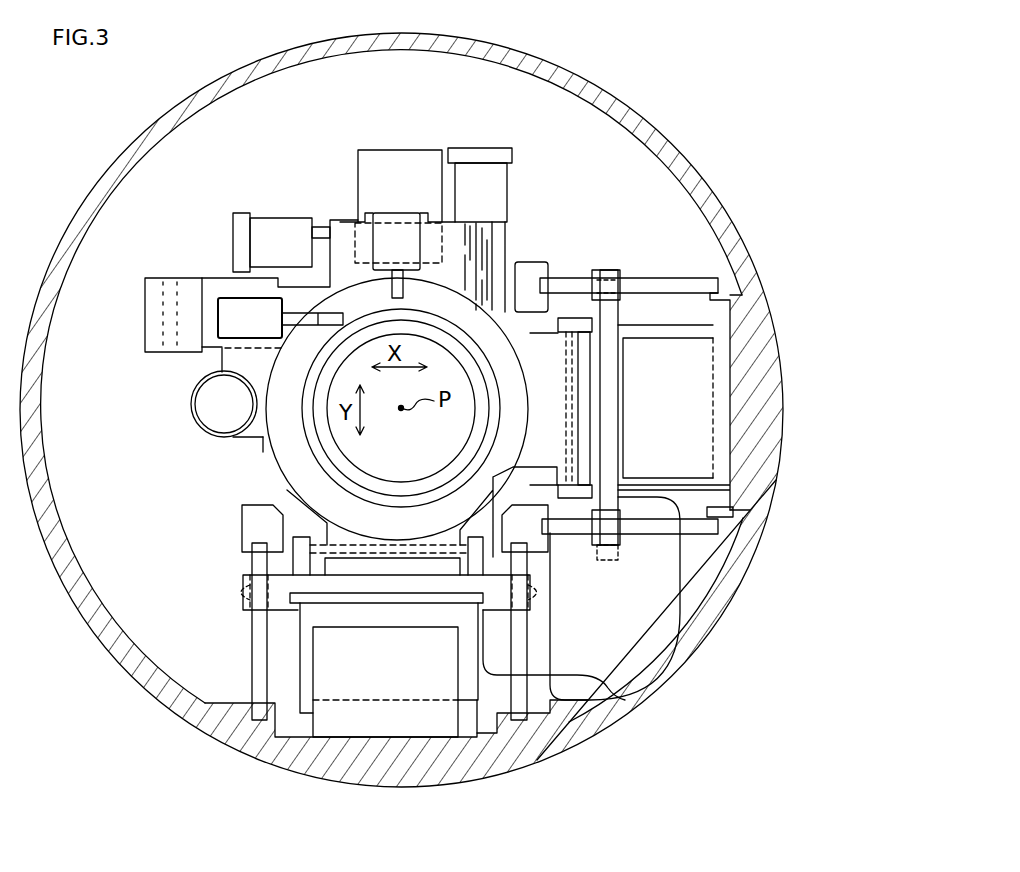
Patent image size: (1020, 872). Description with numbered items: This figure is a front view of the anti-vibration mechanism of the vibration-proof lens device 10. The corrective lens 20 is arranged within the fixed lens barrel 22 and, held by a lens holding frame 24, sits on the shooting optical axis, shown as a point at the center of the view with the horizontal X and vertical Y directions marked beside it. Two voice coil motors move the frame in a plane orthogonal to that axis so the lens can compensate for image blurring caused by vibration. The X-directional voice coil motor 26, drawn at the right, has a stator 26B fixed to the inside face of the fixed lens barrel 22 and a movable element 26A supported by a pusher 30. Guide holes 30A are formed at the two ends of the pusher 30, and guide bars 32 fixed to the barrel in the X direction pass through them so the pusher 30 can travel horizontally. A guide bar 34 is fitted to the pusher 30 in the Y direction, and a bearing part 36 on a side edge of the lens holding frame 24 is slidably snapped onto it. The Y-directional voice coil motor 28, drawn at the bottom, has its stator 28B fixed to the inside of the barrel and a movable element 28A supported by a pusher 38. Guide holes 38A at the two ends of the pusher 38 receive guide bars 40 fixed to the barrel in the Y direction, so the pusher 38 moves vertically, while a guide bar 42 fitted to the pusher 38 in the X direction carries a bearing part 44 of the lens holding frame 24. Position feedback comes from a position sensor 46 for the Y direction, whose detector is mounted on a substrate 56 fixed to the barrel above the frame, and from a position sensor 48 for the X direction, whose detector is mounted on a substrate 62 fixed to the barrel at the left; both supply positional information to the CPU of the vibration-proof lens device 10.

The vibration-proof lens device 10 is at (668, 88).
The fixed lens barrel 22 is at (690, 158).
The corrective lens 20 is at (360, 460).
The lens holding frame 24 is at (262, 455).
The X-directional voice coil motor 26 is at (722, 330).
The movable element 26A is at (737, 510).
The stator 26B is at (727, 443).
The Y-directional voice coil motor 28 is at (311, 715).
The movable element 28A is at (470, 698).
The stator 28B is at (383, 722).
The pusher 30 is at (596, 268).
The guide hole 30A is at (615, 285).
The guide bar 32 is at (667, 278).
The guide bar 34 is at (577, 389).
The bearing part 36 is at (583, 438).
The pusher 38 is at (243, 590).
The guide hole 38A is at (243, 584).
The guide bar 40 is at (252, 672).
The guide bar 42 is at (413, 556).
The bearing part 44 is at (362, 568).
The position sensor 46 is at (397, 228).
The position sensor 48 is at (243, 310).
The substrate 56 is at (404, 148).
The substrate 62 is at (145, 300).